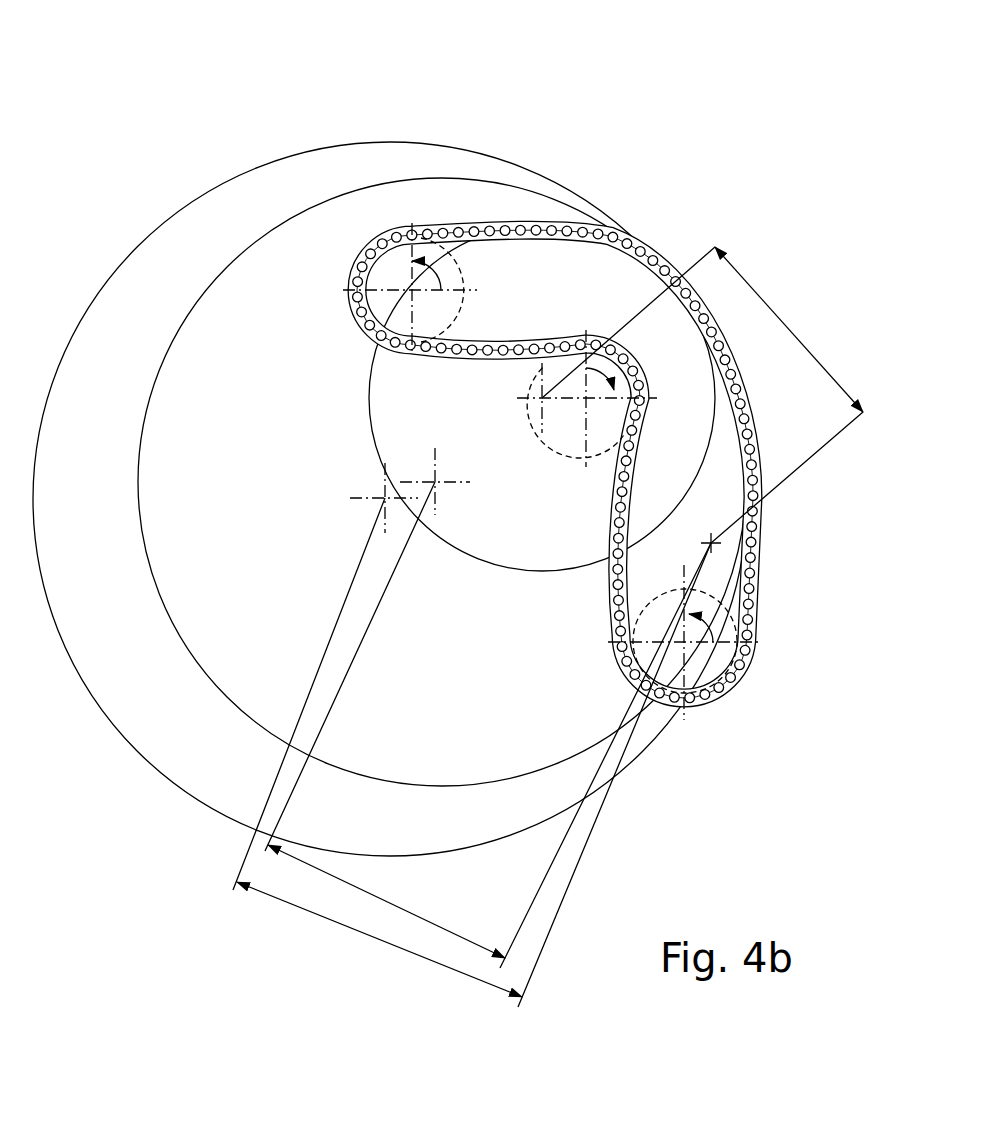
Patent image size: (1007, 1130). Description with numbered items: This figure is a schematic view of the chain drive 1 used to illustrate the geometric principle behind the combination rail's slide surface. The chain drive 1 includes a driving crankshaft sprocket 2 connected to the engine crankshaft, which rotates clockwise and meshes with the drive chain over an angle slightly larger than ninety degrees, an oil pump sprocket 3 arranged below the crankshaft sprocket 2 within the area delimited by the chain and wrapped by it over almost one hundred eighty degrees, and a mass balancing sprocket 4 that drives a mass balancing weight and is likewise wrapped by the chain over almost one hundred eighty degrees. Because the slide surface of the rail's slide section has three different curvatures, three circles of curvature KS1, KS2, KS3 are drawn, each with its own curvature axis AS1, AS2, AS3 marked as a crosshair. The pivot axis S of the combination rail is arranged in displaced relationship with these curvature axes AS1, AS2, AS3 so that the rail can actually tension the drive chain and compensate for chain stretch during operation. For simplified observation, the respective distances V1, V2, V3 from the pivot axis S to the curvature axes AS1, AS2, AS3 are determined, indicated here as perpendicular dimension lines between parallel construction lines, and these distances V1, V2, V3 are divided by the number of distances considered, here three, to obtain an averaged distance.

The chain drive 1 is at (763, 265).
The crankshaft sprocket 2 is at (568, 418).
The oil pump sprocket 3 is at (722, 708).
The mass balancing sprocket 4 is at (349, 290).
The pivot axis S is at (713, 545).
The distance V1 is at (789, 328).
The distance V2 is at (382, 903).
The distance V3 is at (382, 942).
The curvature axis AS1 is at (520, 398).
The curvature axis AS2 is at (447, 482).
The curvature axis AS3 is at (384, 498).
The circle of curvature KS1 is at (533, 572).
The circle of curvature KS2 is at (443, 178).
The circle of curvature KS3 is at (362, 142).